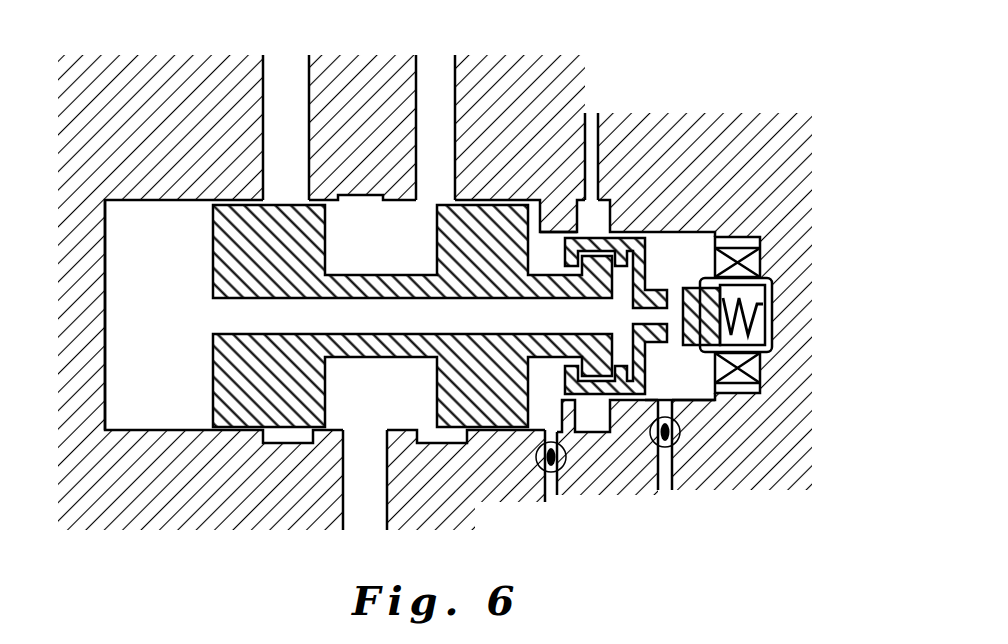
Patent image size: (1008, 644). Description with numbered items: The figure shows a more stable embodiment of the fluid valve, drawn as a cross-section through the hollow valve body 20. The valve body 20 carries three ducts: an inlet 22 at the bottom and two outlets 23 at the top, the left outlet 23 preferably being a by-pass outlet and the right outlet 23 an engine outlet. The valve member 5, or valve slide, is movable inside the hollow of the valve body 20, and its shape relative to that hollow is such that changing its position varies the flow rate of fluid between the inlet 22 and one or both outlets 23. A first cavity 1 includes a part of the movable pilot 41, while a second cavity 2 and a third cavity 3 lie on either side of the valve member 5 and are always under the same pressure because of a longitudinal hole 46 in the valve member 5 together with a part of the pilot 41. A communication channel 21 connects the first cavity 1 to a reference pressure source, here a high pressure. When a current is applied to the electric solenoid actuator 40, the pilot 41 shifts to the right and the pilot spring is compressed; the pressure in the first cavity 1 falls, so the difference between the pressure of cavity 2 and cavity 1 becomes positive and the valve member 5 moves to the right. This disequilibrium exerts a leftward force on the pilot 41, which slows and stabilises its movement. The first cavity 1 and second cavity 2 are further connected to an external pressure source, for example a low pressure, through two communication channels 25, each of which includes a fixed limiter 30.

The hollow valve body 20 is at (114, 44).
The outlet 23 is at (286, 135).
The communication channel 21 is at (591, 98).
The inlet 22 is at (367, 496).
The second cavity 2 is at (166, 334).
The valve member 5 is at (278, 271).
The longitudinal hole 46 is at (401, 329).
The first cavity 1 is at (556, 267).
The movable pilot 41 is at (622, 238).
The third cavity 3 is at (686, 384).
The electric solenoid actuator 40 is at (813, 237).
The communication channel 25 is at (551, 502).
The fixed limiter 30 is at (561, 463).